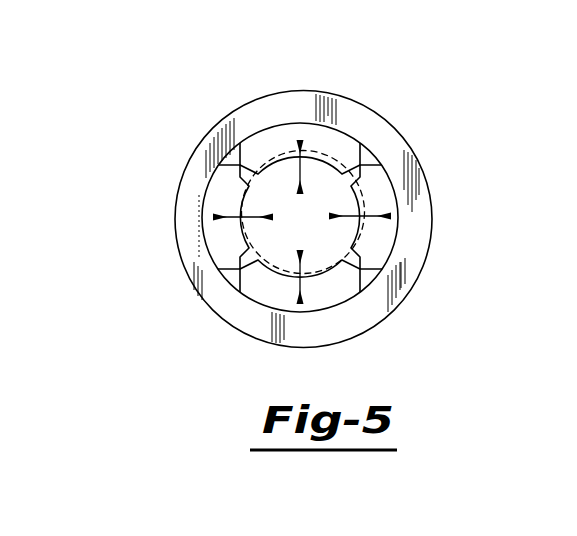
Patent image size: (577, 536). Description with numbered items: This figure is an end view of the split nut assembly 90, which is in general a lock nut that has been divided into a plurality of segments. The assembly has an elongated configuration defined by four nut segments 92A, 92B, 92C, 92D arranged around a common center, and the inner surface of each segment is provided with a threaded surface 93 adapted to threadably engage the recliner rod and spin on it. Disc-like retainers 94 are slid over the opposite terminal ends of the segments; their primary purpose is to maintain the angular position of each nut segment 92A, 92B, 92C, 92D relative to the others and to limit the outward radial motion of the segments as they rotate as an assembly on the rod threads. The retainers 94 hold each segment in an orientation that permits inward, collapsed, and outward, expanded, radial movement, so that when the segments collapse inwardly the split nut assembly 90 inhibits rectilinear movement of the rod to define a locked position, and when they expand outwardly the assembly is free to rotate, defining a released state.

The split nut assembly 90 is at (416, 143).
The retainers 94 is at (417, 193).
The threaded surface 93 is at (268, 266).
The nut segment 92A is at (300, 141).
The nut segment 92B is at (386, 257).
The nut segment 92C is at (341, 299).
The nut segment 92D is at (213, 231).